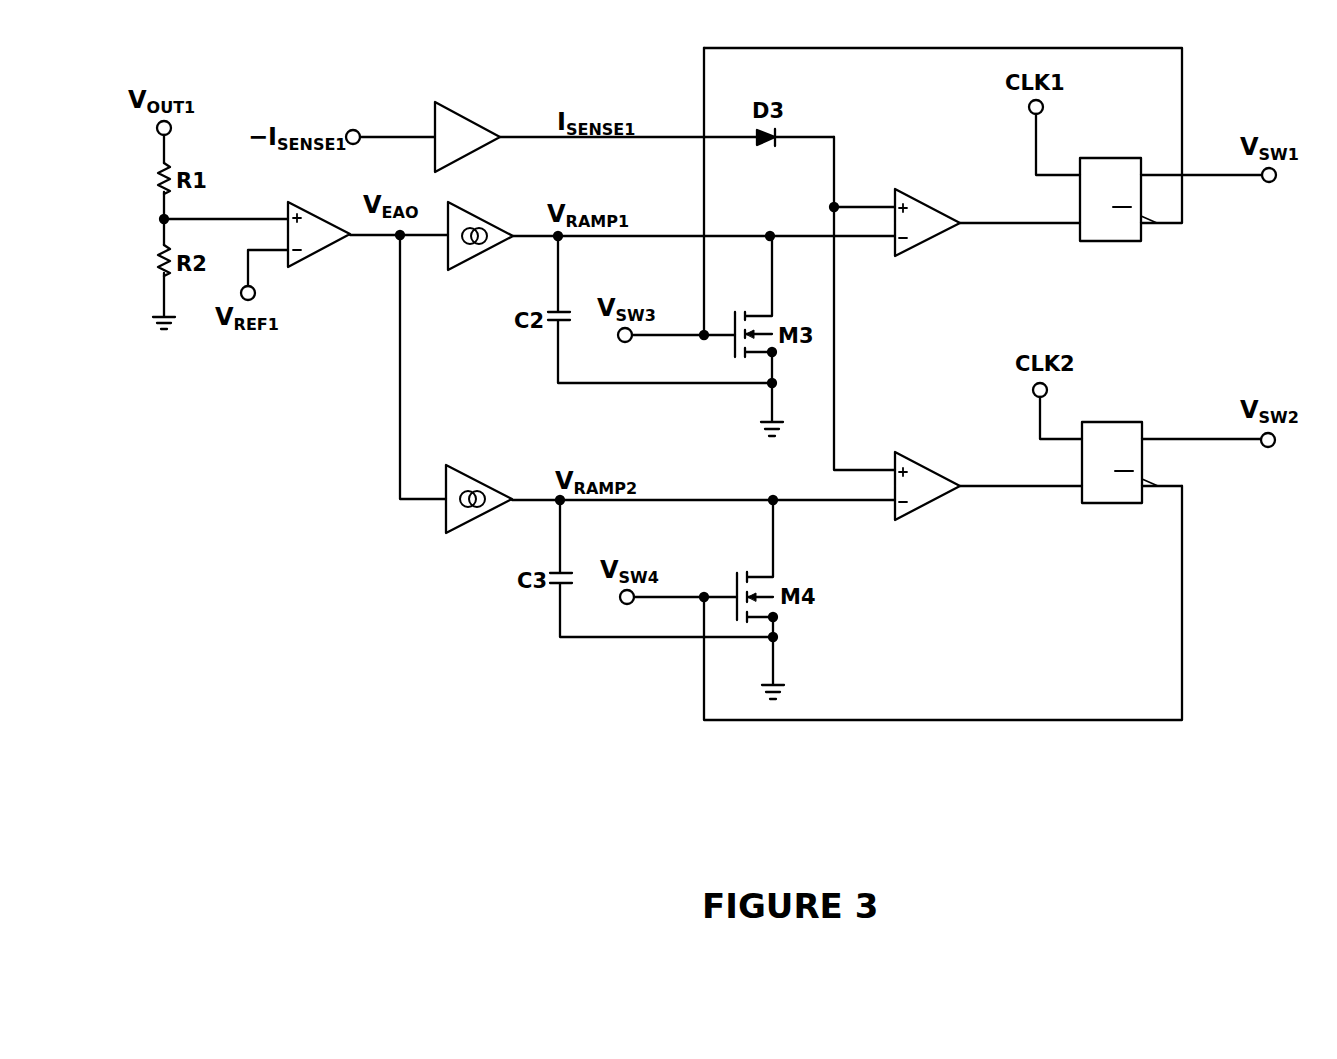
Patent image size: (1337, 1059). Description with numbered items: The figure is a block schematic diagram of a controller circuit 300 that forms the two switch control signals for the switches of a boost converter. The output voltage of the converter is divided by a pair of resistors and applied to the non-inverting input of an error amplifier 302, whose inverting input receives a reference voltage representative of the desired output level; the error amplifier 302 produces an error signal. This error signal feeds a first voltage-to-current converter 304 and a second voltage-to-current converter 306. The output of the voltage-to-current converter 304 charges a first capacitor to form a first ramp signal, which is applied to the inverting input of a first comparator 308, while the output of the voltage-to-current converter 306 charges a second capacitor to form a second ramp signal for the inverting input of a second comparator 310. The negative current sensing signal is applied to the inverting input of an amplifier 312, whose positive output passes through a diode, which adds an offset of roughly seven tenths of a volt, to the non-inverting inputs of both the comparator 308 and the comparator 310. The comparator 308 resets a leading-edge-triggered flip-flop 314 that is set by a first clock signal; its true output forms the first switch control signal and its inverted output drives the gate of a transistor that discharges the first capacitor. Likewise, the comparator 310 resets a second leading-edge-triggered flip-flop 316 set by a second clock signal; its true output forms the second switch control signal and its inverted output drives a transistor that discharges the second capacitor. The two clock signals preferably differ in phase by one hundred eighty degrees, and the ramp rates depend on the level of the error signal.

The controller circuit 300 is at (358, 573).
The error amplifier 302 is at (318, 207).
The voltage-to-current converter 304 is at (483, 207).
The voltage-to-current converter 306 is at (480, 475).
The comparator 308 is at (937, 200).
The comparator 310 is at (932, 463).
The amplifier 312 is at (468, 110).
The leading-edge-triggered flip-flop 314 is at (1110, 157).
The leading-edge-triggered flip-flop 316 is at (1115, 415).